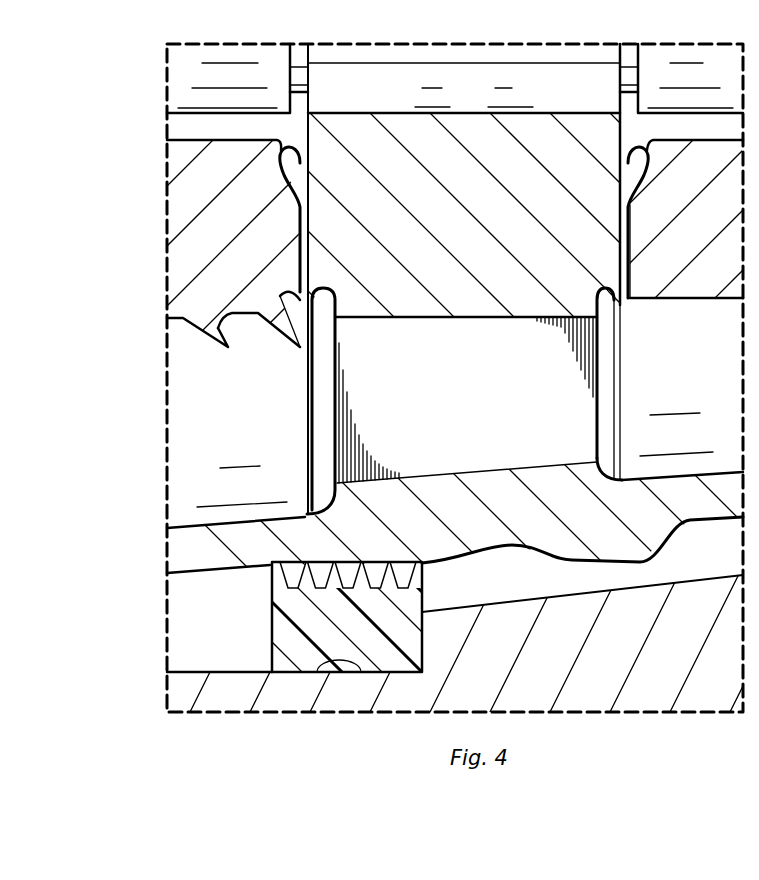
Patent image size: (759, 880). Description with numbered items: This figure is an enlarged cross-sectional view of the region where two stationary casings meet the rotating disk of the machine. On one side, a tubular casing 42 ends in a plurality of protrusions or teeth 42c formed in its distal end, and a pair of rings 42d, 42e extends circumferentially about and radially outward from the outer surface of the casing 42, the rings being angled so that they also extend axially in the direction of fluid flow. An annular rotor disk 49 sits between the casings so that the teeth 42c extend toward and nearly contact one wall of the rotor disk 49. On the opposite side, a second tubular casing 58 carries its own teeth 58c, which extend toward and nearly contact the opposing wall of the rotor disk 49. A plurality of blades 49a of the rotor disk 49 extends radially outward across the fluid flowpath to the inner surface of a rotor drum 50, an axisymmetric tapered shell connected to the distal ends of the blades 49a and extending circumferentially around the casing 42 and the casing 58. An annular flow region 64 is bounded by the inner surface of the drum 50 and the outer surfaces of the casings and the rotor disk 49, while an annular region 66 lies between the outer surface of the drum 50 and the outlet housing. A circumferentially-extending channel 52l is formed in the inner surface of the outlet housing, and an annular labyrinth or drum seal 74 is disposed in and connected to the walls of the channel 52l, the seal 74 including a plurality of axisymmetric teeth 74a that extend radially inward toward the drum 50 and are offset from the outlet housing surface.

The casing 42 is at (187, 140).
The teeth 42c is at (302, 160).
The ring 42d is at (207, 335).
The ring 42e is at (276, 330).
The rotor disk 49 is at (468, 128).
The blades 49a is at (490, 405).
The rotor drum 50 is at (218, 573).
The channel 52l is at (362, 663).
The casing 58 is at (693, 300).
The teeth 58c is at (624, 158).
The annular flow region 64 is at (676, 395).
The annular region 66 is at (721, 563).
The drum seal 74 is at (272, 630).
The teeth 74a is at (422, 567).